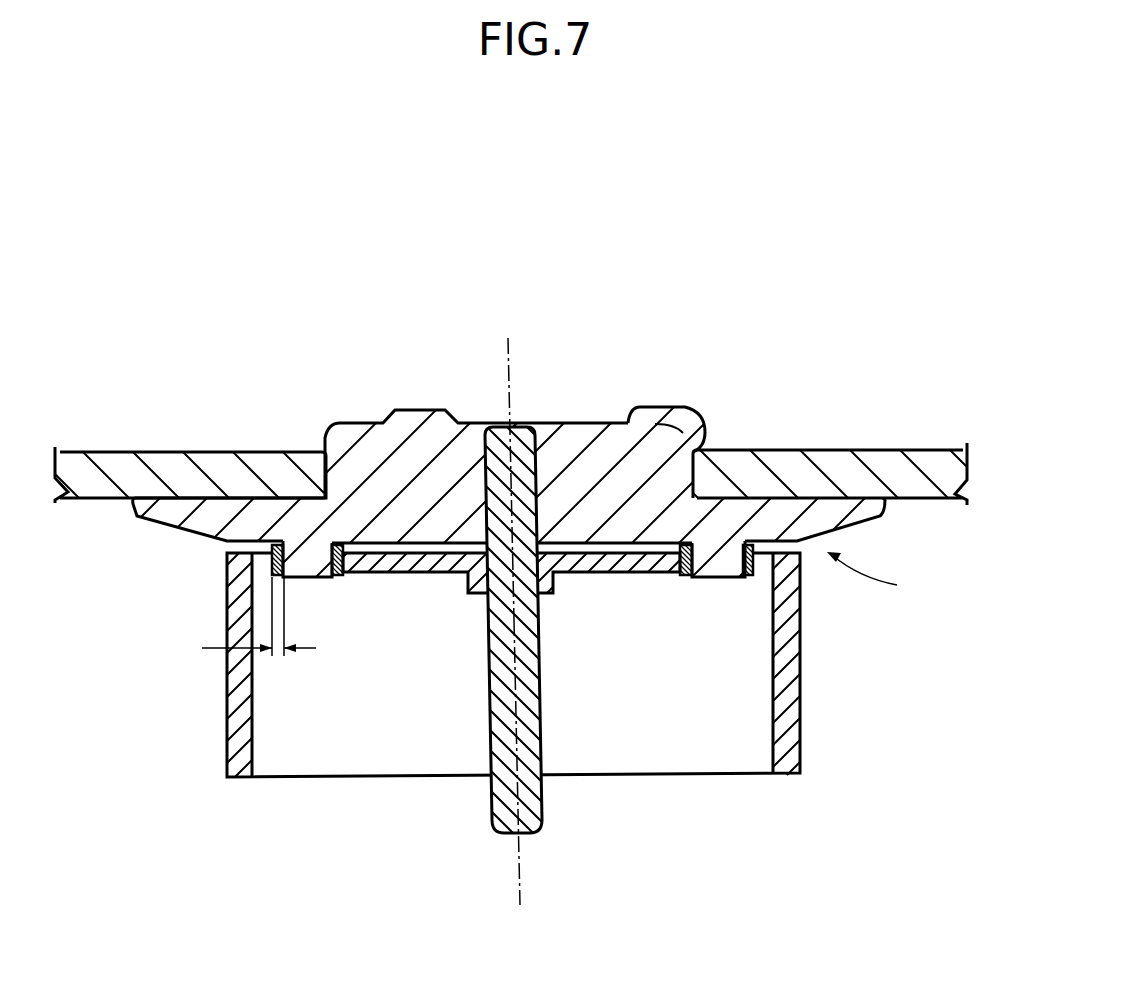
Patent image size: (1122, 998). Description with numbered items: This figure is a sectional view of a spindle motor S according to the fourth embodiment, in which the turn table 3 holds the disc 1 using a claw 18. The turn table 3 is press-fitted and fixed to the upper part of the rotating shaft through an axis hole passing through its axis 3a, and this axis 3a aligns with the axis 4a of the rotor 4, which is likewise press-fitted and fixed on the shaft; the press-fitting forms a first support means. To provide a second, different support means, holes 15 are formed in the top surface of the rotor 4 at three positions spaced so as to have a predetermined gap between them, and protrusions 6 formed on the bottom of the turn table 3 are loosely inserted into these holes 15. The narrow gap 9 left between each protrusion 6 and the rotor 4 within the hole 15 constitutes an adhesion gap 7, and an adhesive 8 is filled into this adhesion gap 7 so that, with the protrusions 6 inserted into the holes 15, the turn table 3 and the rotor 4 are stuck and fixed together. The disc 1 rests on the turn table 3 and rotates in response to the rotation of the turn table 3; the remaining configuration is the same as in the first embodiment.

The disc 1 is at (786, 456).
The turn table 3 is at (572, 432).
The axis of the turn table 3a is at (508, 365).
The rotor 4 is at (793, 658).
The axis of the rotor 4a is at (505, 388).
The protrusions 6 is at (308, 572).
The adhesion gap 7 is at (280, 655).
The adhesive 8 is at (275, 553).
The gap 9 is at (587, 555).
The holes 15 is at (348, 563).
The claw 18 is at (697, 407).
The spindle motor S is at (877, 578).